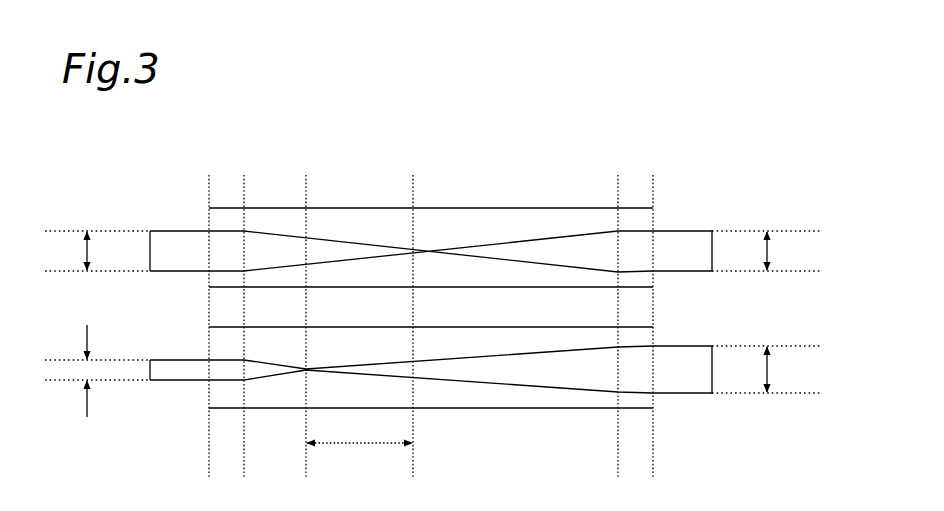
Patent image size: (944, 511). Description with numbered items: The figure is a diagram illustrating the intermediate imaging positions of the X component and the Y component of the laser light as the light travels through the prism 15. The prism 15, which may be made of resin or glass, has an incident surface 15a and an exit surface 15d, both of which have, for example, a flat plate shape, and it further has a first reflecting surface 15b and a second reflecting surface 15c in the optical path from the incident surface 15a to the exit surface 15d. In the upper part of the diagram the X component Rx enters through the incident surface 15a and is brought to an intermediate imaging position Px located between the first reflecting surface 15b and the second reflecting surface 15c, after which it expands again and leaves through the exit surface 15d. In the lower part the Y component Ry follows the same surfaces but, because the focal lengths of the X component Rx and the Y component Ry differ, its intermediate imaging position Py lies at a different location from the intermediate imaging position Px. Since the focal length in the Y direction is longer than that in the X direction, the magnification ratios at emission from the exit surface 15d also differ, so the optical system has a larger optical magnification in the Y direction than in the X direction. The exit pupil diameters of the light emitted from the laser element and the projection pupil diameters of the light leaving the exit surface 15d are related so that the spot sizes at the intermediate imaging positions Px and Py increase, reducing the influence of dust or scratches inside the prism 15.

The prism 15 is at (517, 208).
The incident surface 15a is at (209, 176).
The first reflecting surface 15b is at (245, 180).
The second reflecting surface 15c is at (618, 176).
The exit surface 15d is at (654, 180).
The X component of the laser light Rx is at (192, 229).
The Y component of the laser light Ry is at (190, 357).
The intermediate imaging position in the X direction Px is at (415, 246).
The intermediate imaging position in the Y direction Py is at (303, 373).